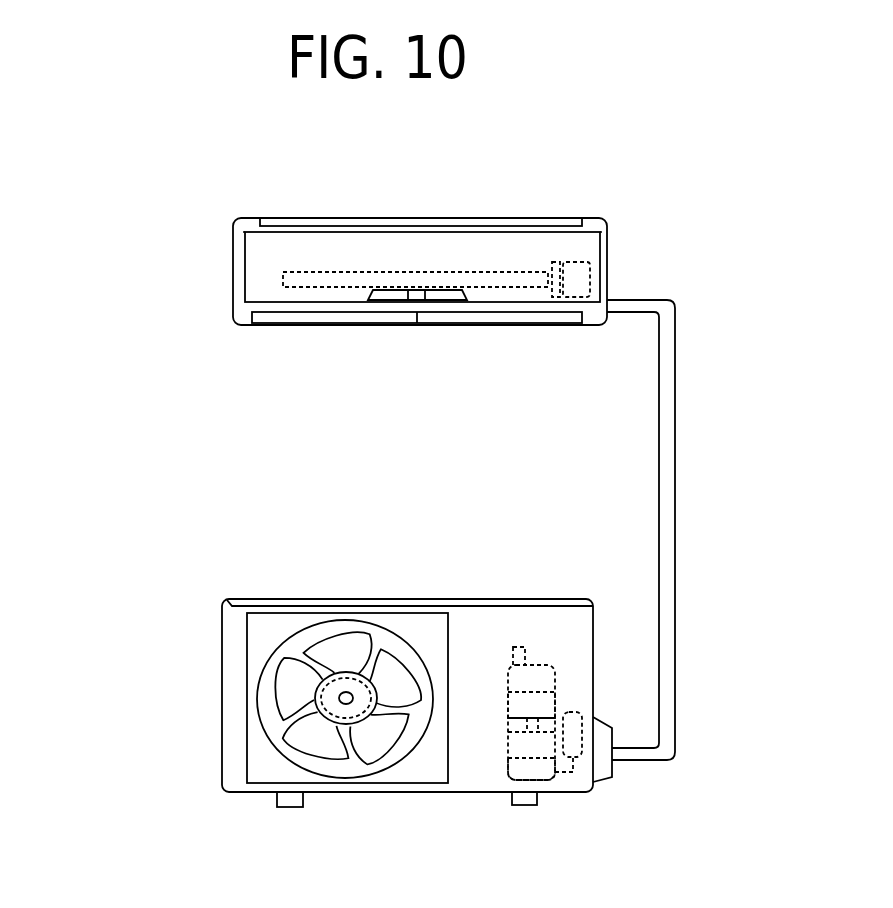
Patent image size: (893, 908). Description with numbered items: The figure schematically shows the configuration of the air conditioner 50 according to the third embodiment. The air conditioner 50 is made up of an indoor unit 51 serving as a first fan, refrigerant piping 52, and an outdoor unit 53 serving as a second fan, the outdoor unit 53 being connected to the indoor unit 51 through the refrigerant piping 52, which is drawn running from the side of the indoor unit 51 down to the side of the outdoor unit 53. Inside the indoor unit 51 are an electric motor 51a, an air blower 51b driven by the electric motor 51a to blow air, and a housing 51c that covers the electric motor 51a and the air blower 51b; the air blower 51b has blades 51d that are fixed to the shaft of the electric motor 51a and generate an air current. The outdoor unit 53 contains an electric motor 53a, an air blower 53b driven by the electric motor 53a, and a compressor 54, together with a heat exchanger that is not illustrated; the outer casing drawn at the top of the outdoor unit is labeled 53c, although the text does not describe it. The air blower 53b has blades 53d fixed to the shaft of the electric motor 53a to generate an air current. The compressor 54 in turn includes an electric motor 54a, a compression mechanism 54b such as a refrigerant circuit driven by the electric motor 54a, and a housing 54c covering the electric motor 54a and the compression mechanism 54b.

The air conditioner 50 is at (108, 207).
The indoor unit 51 is at (294, 196).
The electric motor 51a is at (590, 278).
The air blower 51b is at (283, 275).
The housing 51c is at (413, 218).
The blades 51d is at (557, 297).
The refrigerant piping 52 is at (677, 468).
The outdoor unit 53 is at (296, 556).
The electric motor 53a is at (350, 722).
The air blower 53b is at (247, 662).
The outdoor unit top panel 53c is at (408, 598).
The blades 53d is at (278, 707).
The compressor 54 is at (497, 674).
The electric motor 54a is at (528, 703).
The compression mechanism 54b is at (528, 743).
The housing 54c is at (510, 772).